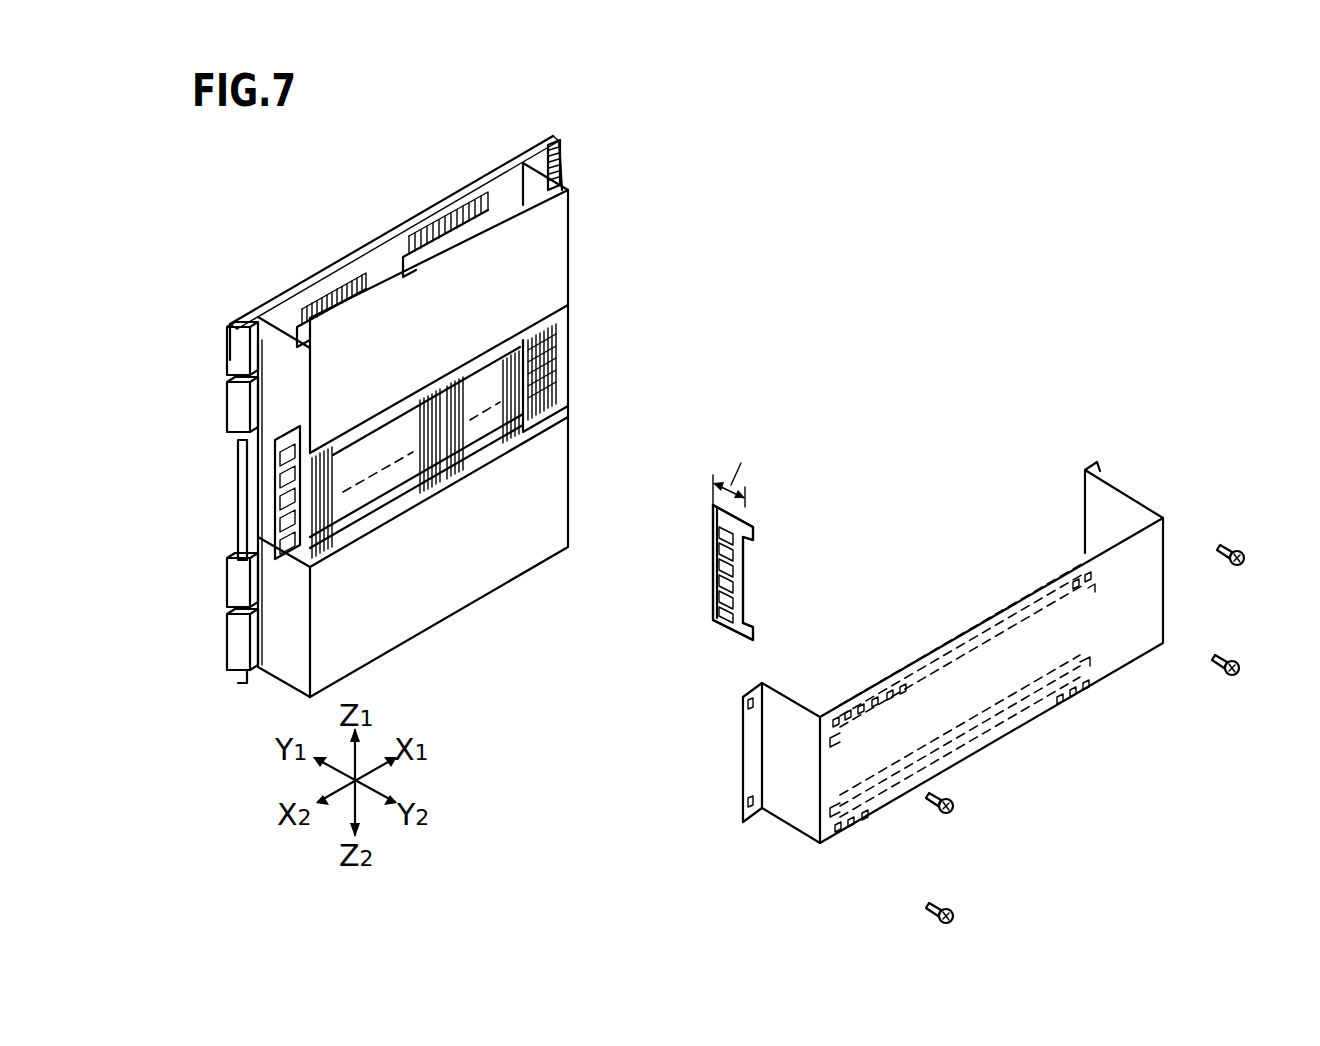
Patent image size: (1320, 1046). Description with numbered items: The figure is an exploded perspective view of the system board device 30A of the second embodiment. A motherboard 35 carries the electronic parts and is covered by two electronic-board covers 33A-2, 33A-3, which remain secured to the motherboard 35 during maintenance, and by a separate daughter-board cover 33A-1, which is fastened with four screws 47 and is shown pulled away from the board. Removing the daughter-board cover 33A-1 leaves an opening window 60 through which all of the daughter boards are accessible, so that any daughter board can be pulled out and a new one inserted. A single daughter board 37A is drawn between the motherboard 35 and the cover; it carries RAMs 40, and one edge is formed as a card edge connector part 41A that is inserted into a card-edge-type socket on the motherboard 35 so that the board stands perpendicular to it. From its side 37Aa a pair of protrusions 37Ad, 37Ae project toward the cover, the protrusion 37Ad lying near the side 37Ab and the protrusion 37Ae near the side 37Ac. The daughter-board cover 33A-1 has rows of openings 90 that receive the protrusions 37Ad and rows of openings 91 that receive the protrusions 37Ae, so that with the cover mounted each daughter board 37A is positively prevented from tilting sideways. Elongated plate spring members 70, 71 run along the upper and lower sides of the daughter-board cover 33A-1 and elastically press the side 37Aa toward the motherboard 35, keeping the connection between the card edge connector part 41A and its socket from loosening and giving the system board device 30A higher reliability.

The system board device 30A is at (926, 147).
The motherboard 35 is at (285, 279).
The electronic-board cover 33A-2 is at (558, 229).
The electronic-board cover 33A-3 is at (568, 463).
The daughter-board cover 33A-1 is at (1139, 489).
The protrusion 37Ad is at (455, 385).
The protrusion 37Ae is at (483, 460).
The opening window 60 is at (538, 430).
The card edge connector part 41A is at (713, 523).
The daughter board 37A is at (755, 529).
The side of daughter board 37Ab is at (754, 525).
The side of daughter board 37Aa is at (747, 583).
The side of daughter board 37Ac is at (733, 630).
The RAMs 40 is at (713, 610).
The plate spring member 70 is at (960, 667).
The plate spring member 71 is at (995, 722).
The openings 90 is at (873, 710).
The openings 91 is at (863, 813).
The screws 47 is at (953, 912).